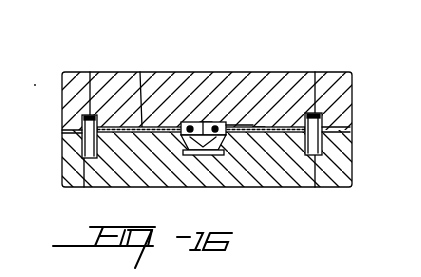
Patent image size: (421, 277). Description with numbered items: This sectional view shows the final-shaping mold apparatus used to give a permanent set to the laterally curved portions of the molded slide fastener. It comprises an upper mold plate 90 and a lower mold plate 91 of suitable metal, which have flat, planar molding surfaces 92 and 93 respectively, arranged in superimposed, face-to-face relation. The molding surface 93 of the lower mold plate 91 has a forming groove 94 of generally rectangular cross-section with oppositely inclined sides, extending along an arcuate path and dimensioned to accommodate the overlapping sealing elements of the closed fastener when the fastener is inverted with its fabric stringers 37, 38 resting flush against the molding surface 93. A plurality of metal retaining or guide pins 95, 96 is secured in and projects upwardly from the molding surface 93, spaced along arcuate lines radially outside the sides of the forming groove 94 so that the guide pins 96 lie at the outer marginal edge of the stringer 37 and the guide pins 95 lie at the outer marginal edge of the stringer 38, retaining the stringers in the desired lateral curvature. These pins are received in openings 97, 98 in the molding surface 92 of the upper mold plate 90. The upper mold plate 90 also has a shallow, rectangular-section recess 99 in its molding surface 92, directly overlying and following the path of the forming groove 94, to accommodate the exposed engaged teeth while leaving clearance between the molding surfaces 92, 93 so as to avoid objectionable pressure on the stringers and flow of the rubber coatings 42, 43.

The upper mold plate 90 is at (177, 88).
The opening 97 is at (90, 72).
The fabric stringer 38 is at (140, 72).
The recess 99 is at (206, 122).
The fabric stringer 37 is at (259, 127).
The opening 98 is at (315, 72).
The molding surface 93 is at (62, 131).
The molding surface 92 is at (350, 130).
The guide pin 95 is at (85, 187).
The coating 42 is at (123, 187).
The lower mold plate 91 is at (168, 178).
The forming groove 94 is at (207, 155).
The coating 43 is at (268, 140).
The guide pin 96 is at (315, 190).